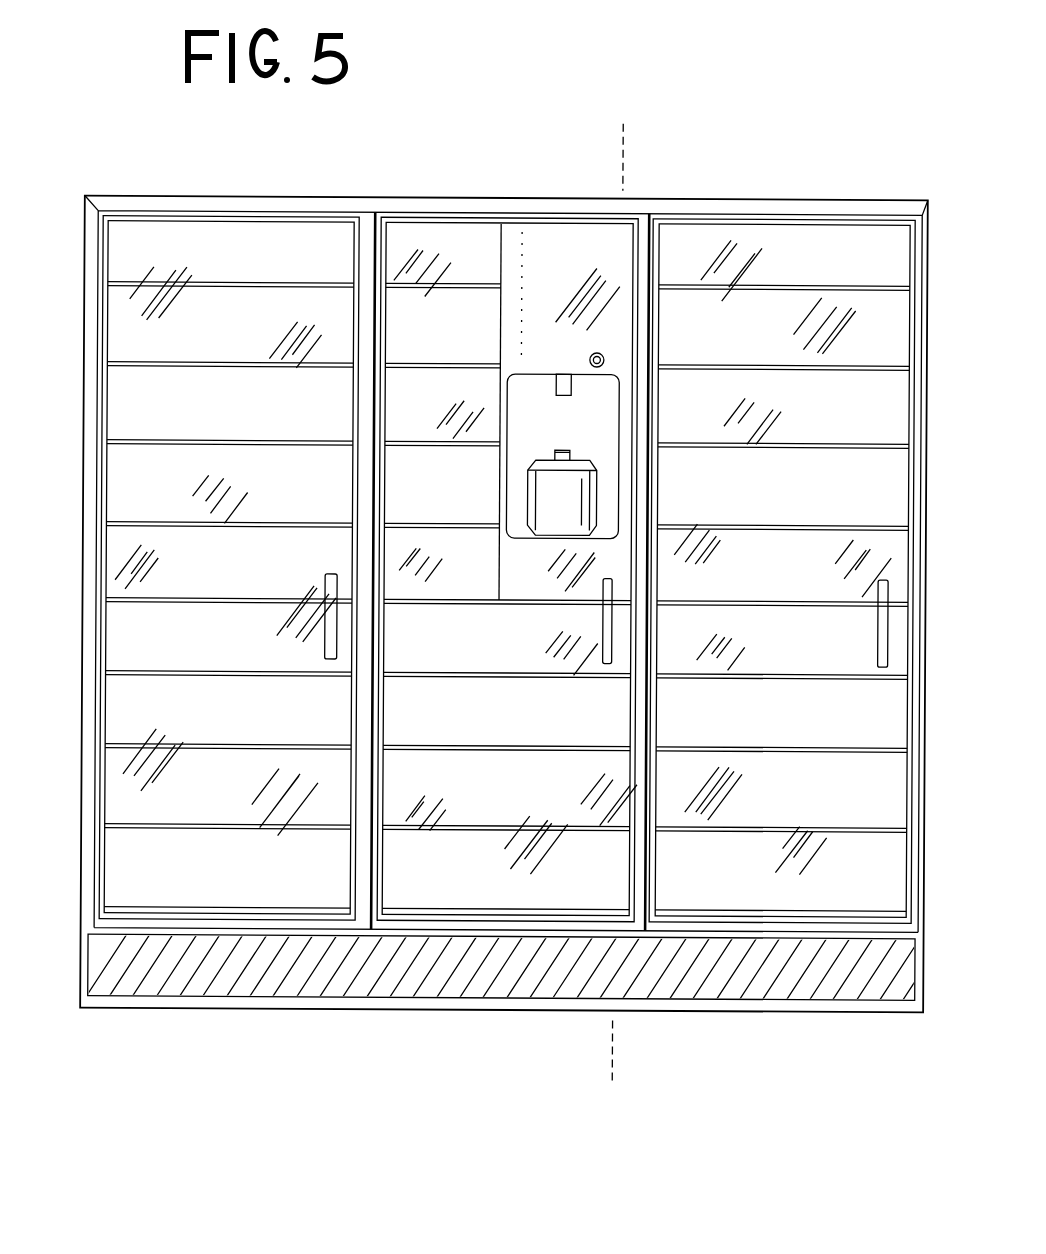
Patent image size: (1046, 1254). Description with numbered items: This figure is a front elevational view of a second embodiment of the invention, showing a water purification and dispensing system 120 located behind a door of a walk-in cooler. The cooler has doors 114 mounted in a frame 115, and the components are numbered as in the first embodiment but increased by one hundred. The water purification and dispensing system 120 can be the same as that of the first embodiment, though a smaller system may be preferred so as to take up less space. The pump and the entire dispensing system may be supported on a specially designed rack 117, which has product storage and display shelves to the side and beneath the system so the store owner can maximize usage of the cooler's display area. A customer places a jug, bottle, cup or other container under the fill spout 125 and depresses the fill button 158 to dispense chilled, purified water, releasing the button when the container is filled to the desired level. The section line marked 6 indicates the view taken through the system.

The doors 114 is at (127, 413).
The frame 115 is at (89, 761).
The rack 117 is at (125, 672).
The water purification and dispensing system 120 is at (601, 246).
The fill spout 125 is at (571, 384).
The fill button 158 is at (603, 357).
The section line 6- 6 is at (553, 1063).